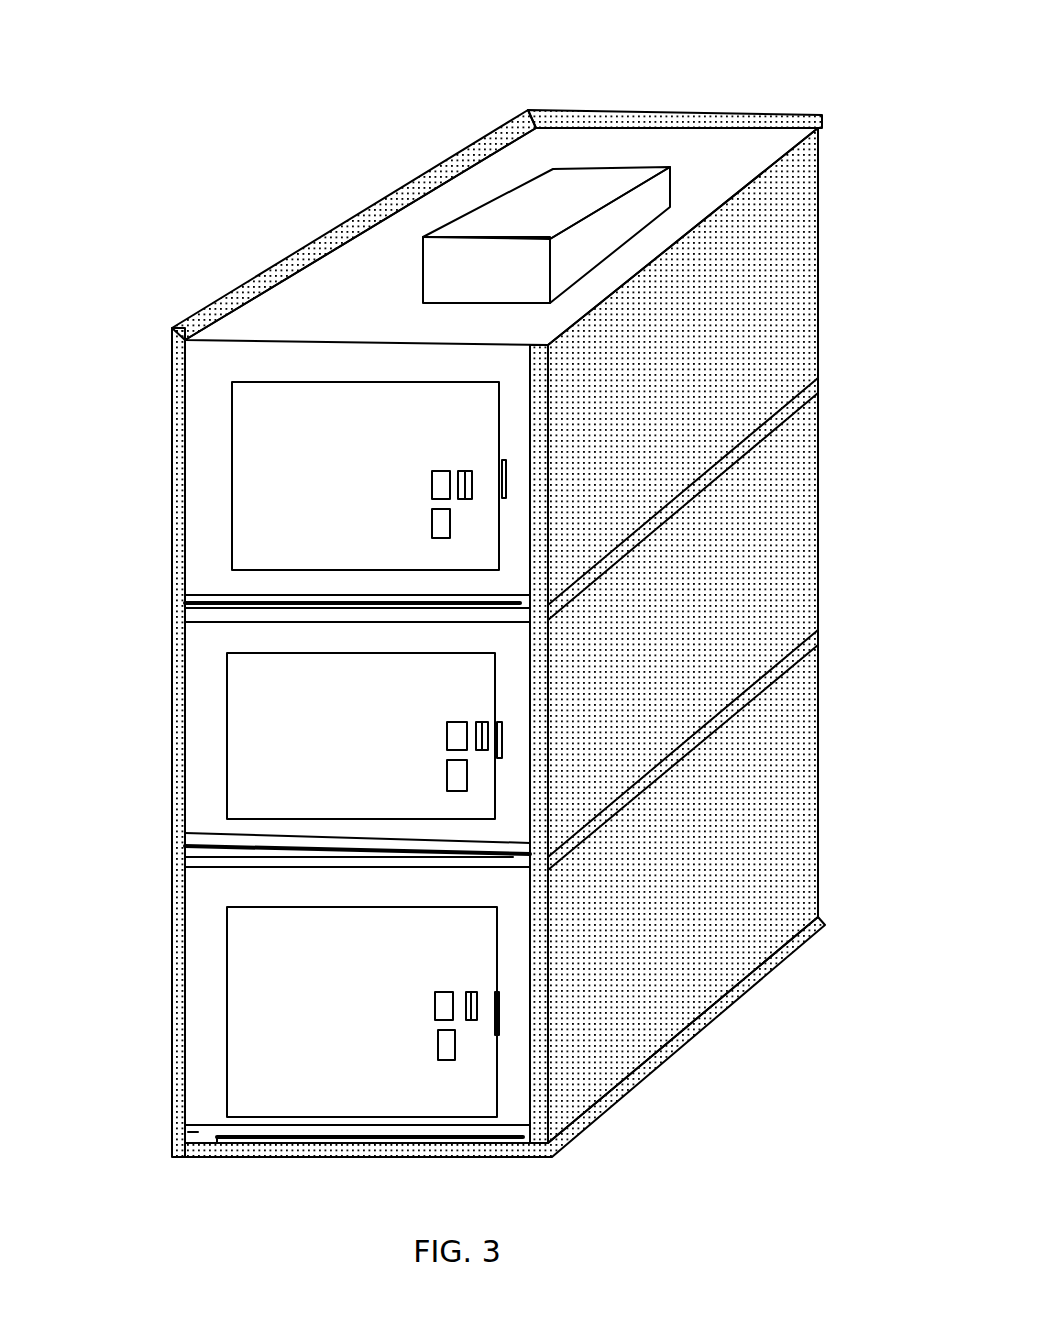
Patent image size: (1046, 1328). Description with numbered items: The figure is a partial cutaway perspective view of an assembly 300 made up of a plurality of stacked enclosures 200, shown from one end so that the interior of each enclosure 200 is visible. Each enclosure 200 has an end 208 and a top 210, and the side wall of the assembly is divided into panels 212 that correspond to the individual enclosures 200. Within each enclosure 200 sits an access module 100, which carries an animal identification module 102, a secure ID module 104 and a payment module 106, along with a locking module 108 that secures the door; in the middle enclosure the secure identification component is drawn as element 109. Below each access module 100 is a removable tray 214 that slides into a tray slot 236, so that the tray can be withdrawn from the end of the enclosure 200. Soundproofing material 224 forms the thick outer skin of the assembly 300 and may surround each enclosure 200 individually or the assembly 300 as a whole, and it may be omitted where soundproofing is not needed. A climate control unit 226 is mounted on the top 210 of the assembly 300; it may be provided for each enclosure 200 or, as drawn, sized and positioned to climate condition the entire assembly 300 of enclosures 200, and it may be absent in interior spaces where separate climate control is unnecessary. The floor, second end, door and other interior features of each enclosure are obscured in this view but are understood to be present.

The assembly 300 is at (302, 172).
The enclosure 200 is at (838, 302).
The top 210 is at (718, 172).
The side panel 212 is at (807, 212).
The soundproofing material 224 is at (488, 162).
The climate control unit 226 is at (577, 187).
The access module 100 is at (253, 520).
The animal identification module 102 is at (440, 483).
The secure ID module 104 is at (283, 658).
The payment module 106 is at (438, 529).
The locking module 108 is at (637, 833).
The connector 109 is at (292, 708).
The end 208 is at (202, 423).
The removable tray 214 is at (195, 610).
The tray slot 236 is at (190, 605).